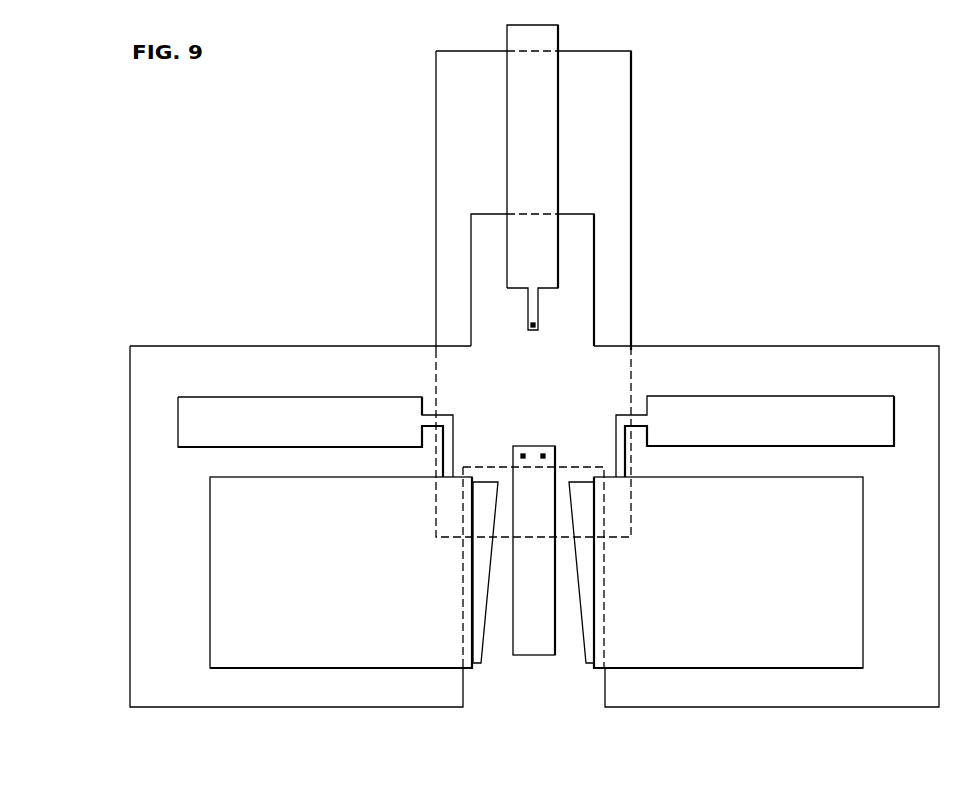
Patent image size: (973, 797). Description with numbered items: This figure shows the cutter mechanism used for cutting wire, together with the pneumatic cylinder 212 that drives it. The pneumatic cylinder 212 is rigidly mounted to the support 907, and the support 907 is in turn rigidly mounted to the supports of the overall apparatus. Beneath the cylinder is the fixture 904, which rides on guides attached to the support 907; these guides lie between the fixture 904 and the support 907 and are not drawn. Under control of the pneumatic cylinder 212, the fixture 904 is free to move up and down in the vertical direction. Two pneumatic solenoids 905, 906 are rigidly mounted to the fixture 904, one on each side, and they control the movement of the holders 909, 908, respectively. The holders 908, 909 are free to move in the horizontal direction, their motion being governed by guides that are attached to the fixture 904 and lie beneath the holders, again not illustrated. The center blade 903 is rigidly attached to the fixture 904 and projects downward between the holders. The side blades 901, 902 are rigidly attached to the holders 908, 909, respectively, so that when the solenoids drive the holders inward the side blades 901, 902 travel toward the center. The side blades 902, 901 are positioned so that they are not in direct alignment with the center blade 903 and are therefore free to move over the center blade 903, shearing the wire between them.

The pneumatic cylinder 212 is at (507, 77).
The support 907 is at (632, 137).
The fixture 904 is at (830, 345).
The pneumatic solenoid 906 is at (293, 395).
The pneumatic solenoid 905 is at (767, 396).
The holder 908 is at (210, 507).
The holder 909 is at (863, 507).
The side blade 901 is at (483, 663).
The side blade 902 is at (577, 657).
The center blade 903 is at (543, 655).